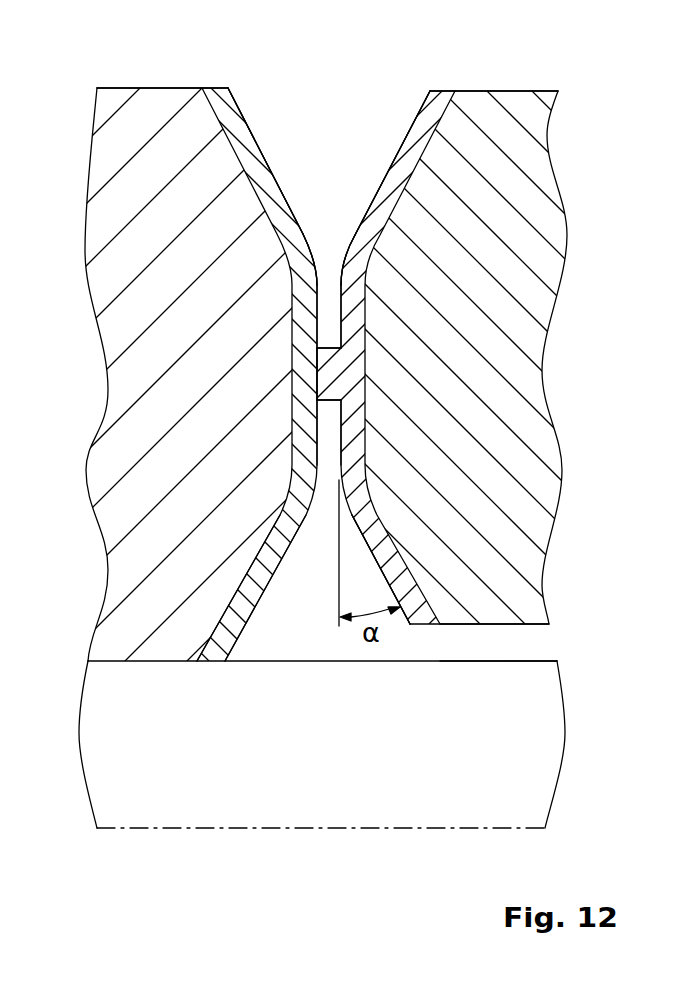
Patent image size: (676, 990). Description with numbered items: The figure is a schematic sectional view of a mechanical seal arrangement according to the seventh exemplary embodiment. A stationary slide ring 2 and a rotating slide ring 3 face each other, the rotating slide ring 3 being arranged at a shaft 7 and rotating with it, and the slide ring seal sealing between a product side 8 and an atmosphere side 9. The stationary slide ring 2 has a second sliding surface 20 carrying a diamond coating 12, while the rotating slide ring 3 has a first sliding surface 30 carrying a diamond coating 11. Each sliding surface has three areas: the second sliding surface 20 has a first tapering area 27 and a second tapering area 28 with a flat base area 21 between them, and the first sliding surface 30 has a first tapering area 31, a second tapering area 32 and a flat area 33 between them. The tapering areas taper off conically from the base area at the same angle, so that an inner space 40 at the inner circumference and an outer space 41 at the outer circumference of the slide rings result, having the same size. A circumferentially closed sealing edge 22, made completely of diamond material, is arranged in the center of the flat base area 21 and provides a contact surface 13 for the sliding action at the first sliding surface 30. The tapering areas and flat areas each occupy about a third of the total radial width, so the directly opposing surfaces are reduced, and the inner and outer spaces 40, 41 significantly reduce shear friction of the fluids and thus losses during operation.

The stationary slide ring 2 is at (510, 91).
The rotating slide ring 3 is at (150, 88).
The shaft 7 is at (548, 740).
The product side 8 is at (338, 26).
The atmosphere side 9 is at (545, 642).
The diamond coating 11 is at (445, 91).
The diamond coating 12 is at (227, 88).
The contact surface 13 is at (320, 394).
The second sliding surface 20 is at (338, 313).
The flat base area 21 is at (330, 442).
The sealing edge 22 is at (324, 365).
The first tapering area 27 is at (370, 548).
The second tapering area 28 is at (412, 122).
The first sliding surface 30 is at (290, 177).
The first tapering area 31 is at (242, 637).
The second tapering area 32 is at (247, 118).
The flat area 33 is at (331, 419).
The inner space 40 is at (313, 645).
The outer space 41 is at (347, 113).